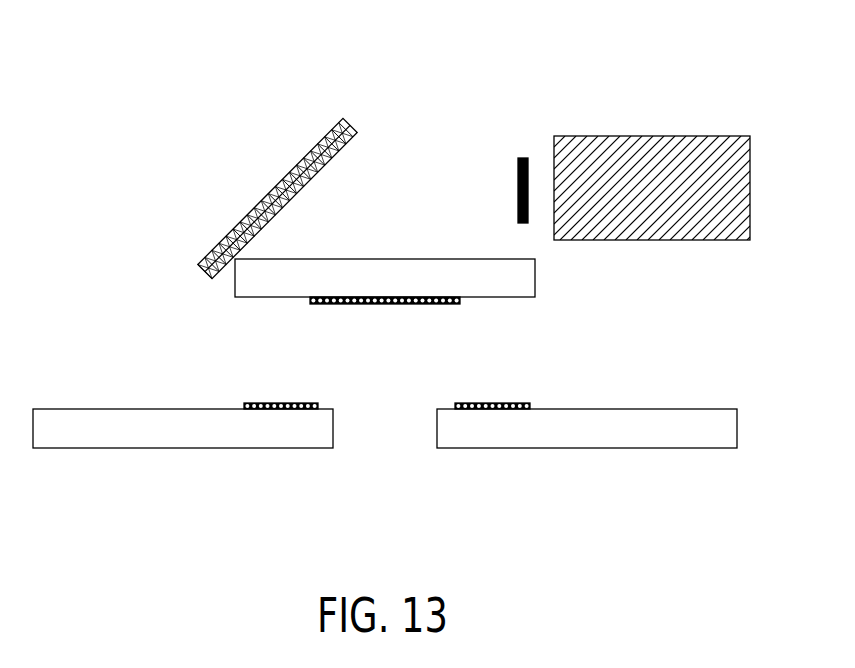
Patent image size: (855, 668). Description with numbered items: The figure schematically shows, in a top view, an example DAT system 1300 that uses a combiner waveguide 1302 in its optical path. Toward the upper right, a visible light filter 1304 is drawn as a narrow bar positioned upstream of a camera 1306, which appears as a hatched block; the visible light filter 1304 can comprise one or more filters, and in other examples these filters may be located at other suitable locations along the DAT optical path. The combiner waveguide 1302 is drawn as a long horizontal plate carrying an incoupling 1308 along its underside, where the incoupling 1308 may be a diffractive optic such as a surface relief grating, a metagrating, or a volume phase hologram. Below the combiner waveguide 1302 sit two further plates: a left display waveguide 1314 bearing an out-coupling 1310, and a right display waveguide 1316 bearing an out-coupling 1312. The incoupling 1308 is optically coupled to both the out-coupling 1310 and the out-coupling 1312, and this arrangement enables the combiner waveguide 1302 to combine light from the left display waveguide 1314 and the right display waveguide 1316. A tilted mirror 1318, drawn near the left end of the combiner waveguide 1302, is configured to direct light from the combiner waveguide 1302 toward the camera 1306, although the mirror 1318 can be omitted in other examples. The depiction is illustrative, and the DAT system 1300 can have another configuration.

The DAT system 1300 is at (120, 90).
The combiner waveguide 1302 is at (520, 288).
The visible light filter 1304 is at (520, 155).
The camera 1306 is at (654, 136).
The incoupling 1308 is at (337, 307).
The out-coupling 1310 is at (278, 402).
The out-coupling 1312 is at (505, 402).
The left display waveguide 1314 is at (92, 438).
The right display waveguide 1316 is at (692, 438).
The mirror 1318 is at (242, 215).